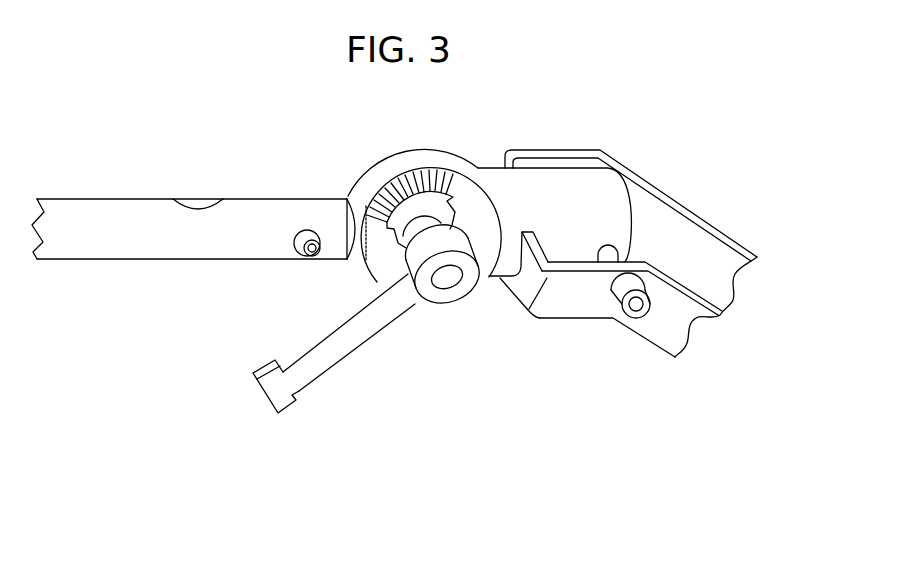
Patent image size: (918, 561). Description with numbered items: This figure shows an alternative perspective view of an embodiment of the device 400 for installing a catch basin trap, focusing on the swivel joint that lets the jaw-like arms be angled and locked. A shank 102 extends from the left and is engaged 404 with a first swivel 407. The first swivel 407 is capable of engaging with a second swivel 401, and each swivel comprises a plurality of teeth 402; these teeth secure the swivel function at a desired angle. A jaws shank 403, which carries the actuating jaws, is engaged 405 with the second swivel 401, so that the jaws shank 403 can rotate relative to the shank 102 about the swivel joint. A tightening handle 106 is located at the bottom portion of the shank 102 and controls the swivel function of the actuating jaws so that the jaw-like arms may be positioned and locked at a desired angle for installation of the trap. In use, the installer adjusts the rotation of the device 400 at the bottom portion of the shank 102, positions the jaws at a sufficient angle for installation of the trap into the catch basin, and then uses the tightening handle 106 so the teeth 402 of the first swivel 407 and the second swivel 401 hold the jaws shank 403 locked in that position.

The device 400 is at (190, 105).
The shank 102 is at (157, 255).
The tightening handle 106 is at (285, 400).
The second swivel 401 is at (393, 158).
The teeth 402 is at (390, 197).
The jaws shank 403 is at (525, 180).
The engagement 404 is at (357, 240).
The engagement 405 is at (476, 175).
The first swivel 407 is at (484, 245).